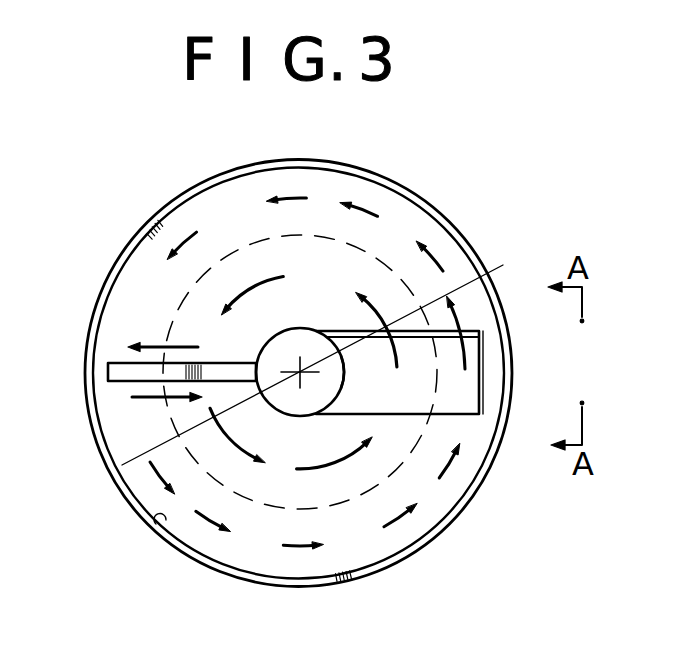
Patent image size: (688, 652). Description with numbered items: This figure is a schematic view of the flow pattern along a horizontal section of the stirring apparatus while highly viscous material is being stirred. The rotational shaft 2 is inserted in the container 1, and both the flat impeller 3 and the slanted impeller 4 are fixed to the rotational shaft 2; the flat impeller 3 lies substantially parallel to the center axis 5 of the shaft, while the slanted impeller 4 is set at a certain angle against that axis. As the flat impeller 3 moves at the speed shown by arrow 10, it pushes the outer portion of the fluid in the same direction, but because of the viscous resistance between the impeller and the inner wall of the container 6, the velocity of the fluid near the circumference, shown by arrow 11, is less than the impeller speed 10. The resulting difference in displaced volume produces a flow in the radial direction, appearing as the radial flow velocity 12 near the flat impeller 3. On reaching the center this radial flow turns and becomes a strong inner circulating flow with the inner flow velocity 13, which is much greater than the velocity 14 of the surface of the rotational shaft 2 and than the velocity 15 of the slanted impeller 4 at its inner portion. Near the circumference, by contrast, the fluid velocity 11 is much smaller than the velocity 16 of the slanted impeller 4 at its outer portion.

The container 1 is at (457, 222).
The rotational shaft 2 is at (311, 338).
The flat impeller 3 is at (112, 366).
The slanted impeller 4 is at (476, 393).
The center axis 5 is at (298, 366).
The inner wall of the container 6 is at (164, 527).
The speed of the flat impeller 10 is at (110, 414).
The velocity of the fluid near the circumference 11 is at (152, 464).
The radial flow velocity 12 is at (160, 397).
The inner flow velocity 13 is at (378, 312).
The velocity of the surface of the rotational shaft 14 is at (344, 375).
The velocity of the slanted impeller 15 is at (403, 360).
The velocity of the slanted impeller at its outer portion 16 is at (462, 312).